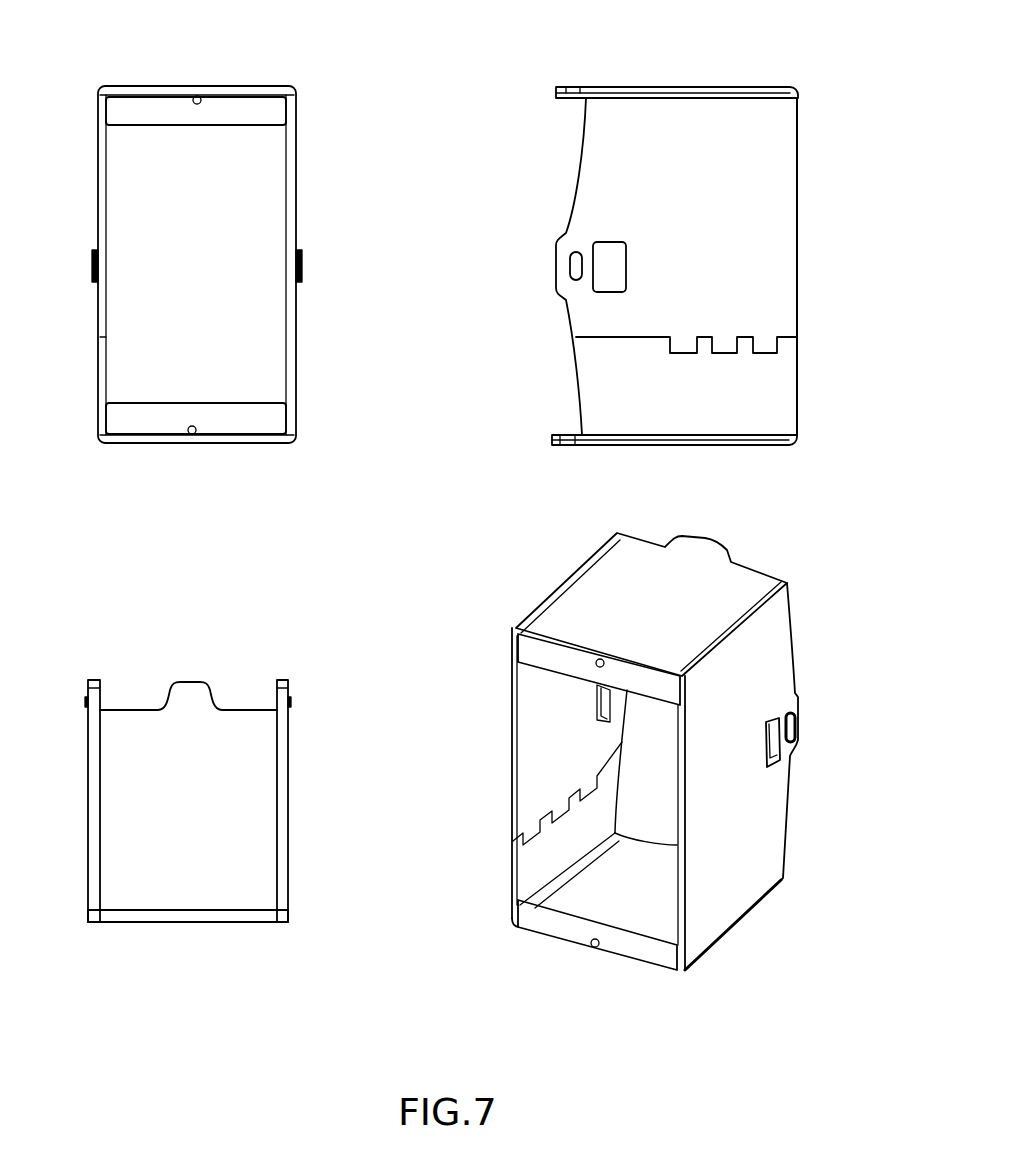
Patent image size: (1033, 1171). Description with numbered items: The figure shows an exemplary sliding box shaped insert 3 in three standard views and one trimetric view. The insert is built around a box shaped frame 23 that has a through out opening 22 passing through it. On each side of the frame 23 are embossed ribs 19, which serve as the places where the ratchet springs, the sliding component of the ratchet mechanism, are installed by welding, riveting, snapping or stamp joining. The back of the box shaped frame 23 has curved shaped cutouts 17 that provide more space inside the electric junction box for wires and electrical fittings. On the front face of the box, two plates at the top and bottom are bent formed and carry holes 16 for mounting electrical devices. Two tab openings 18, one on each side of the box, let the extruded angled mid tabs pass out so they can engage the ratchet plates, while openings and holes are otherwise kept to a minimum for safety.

The sliding box shaped insert 3 is at (549, 590).
The holes 16 is at (201, 99).
The curved shaped cutouts 17 is at (562, 350).
The tab openings 18 is at (778, 760).
The embossed ribs 19 is at (800, 722).
The through out opening 22 is at (240, 258).
The box shaped frame 23 is at (726, 863).